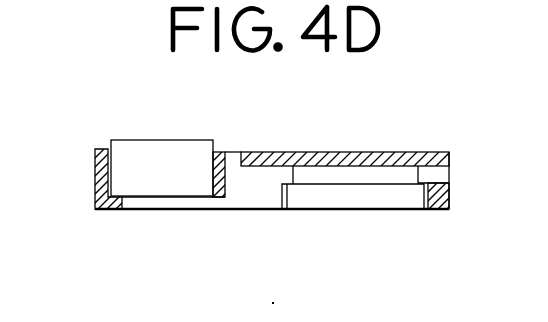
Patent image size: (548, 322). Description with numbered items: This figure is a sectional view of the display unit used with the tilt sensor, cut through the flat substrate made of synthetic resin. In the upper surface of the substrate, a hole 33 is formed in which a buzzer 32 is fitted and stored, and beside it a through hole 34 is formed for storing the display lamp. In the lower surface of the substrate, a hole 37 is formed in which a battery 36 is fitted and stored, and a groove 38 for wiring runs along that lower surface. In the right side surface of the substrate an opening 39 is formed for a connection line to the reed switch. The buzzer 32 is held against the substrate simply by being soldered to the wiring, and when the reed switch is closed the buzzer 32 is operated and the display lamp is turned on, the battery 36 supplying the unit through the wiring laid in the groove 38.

The buzzer 32 is at (194, 145).
The hole 33 is at (100, 183).
The through hole 34 is at (235, 152).
The battery 36 is at (368, 205).
The hole 37 is at (287, 192).
The groove 38 is at (393, 172).
The opening 39 is at (443, 174).